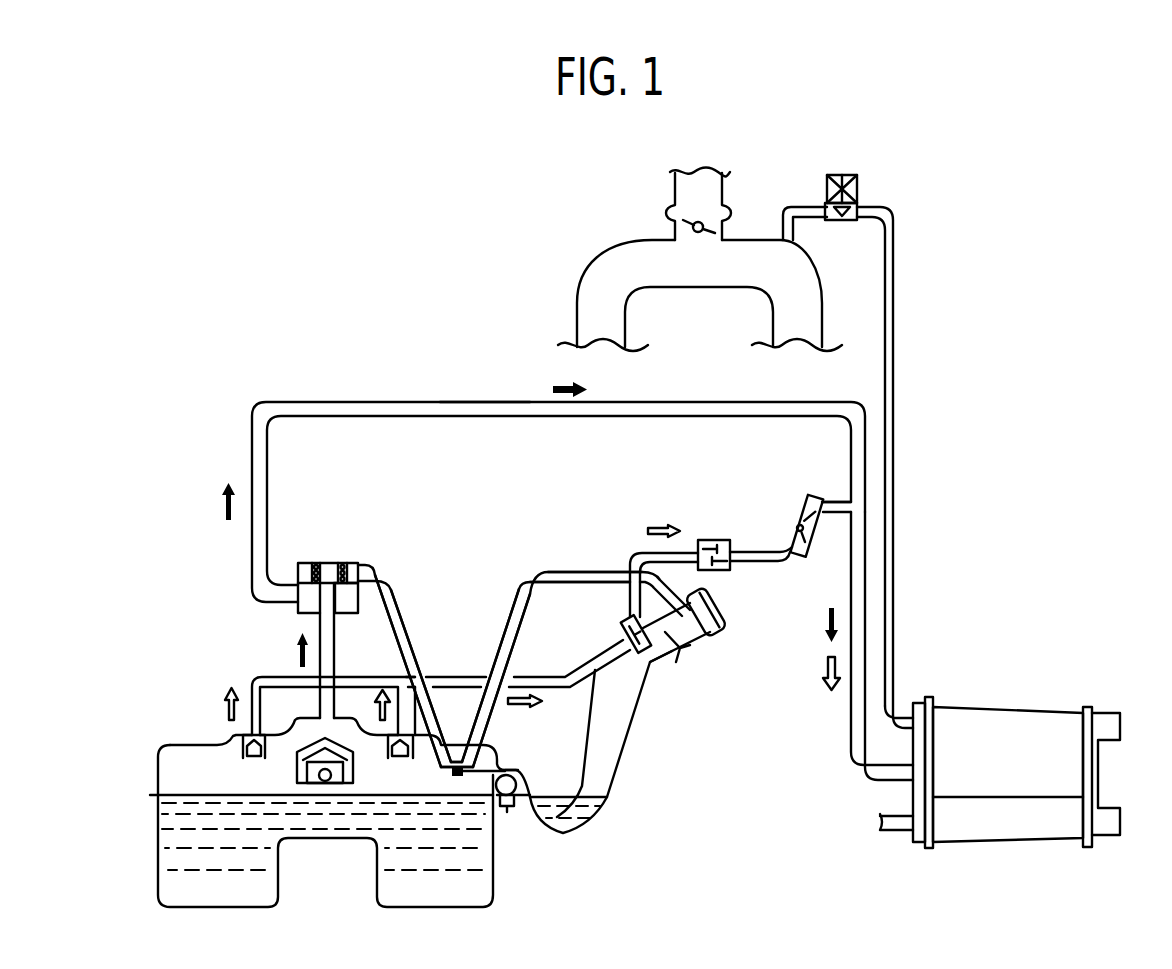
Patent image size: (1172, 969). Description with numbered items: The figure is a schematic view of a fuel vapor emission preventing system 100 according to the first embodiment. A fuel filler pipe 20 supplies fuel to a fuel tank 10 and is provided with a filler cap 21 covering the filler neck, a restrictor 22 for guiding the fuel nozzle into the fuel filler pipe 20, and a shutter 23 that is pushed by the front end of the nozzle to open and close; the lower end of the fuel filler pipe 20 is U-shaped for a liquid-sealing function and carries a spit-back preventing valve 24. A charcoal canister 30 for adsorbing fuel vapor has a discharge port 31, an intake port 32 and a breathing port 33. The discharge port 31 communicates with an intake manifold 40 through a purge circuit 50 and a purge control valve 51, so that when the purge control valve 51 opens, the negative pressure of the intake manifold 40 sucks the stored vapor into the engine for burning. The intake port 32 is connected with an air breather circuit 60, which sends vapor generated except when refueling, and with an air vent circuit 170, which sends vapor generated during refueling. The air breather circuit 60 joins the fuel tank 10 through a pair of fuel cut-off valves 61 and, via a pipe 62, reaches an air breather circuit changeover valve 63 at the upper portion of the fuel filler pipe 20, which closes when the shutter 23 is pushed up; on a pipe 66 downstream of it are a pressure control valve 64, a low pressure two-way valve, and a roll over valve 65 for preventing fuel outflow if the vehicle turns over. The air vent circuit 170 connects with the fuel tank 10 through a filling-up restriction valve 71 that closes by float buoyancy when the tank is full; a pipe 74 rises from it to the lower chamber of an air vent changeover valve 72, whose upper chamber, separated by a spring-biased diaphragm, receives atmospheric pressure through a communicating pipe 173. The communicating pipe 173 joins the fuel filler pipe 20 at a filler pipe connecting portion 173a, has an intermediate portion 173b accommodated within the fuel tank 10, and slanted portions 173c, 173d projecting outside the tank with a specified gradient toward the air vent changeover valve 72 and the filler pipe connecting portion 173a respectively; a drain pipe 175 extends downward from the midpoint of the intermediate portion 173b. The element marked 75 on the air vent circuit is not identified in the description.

The fuel vapor emission preventing system 100 is at (277, 358).
The fuel tank 10 is at (500, 895).
The fuel filler pipe 20 is at (632, 755).
The filler cap 21 is at (726, 612).
The restrictor 22 is at (690, 652).
The shutter 23 is at (668, 653).
The spit-back preventing valve 24 is at (510, 795).
The charcoal canister 30 is at (1000, 700).
The discharge port 31 is at (900, 716).
The intake port 32 is at (896, 778).
The breathing port 33 is at (896, 832).
The intake manifold 40 is at (748, 228).
The purge circuit 50 is at (900, 402).
The purge control valve 51 is at (858, 190).
The air breather circuit 60 is at (250, 670).
The fuel cut-off valves 61 is at (248, 757).
The pipe 62 is at (455, 678).
The air breather circuit changeover valve 63 is at (622, 629).
The pressure control valve 64 is at (713, 540).
The roll over valve 65 is at (803, 500).
The pipe 66 is at (636, 548).
The filling-up restriction valve 71 is at (302, 760).
The air vent changeover valve 72 is at (329, 563).
The pipe 74 is at (334, 650).
The gas passage 75 is at (480, 402).
The air vent circuit 170 is at (367, 398).
The communicating pipe 173 is at (374, 565).
The filler pipe connecting portion 173a is at (580, 570).
The intermediate portion 173b is at (465, 752).
The slanted portion 173c is at (398, 605).
The slanted portion 173d is at (503, 655).
The drain pipe 175 is at (493, 767).